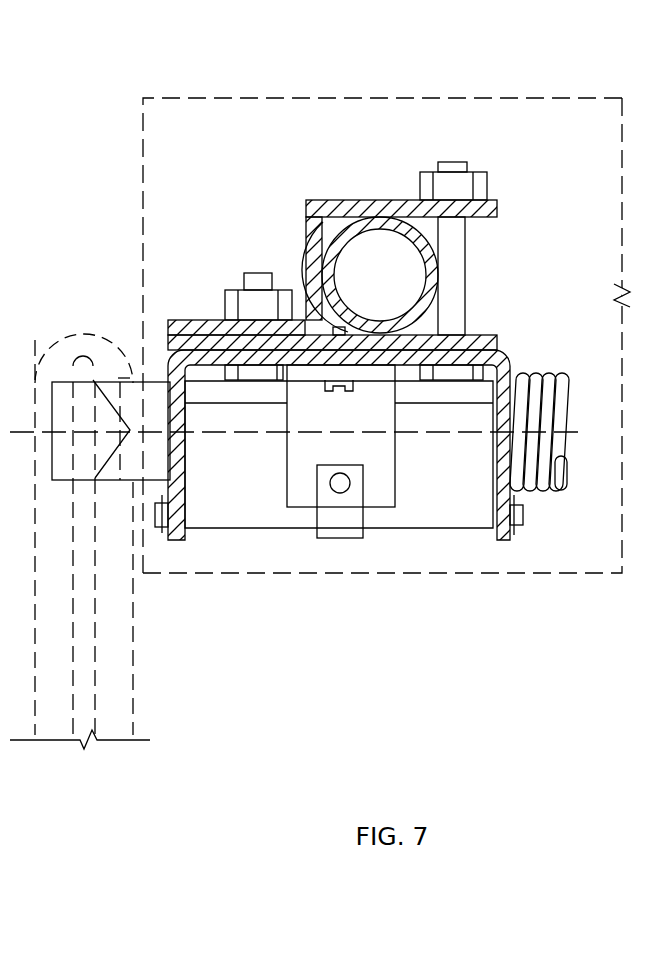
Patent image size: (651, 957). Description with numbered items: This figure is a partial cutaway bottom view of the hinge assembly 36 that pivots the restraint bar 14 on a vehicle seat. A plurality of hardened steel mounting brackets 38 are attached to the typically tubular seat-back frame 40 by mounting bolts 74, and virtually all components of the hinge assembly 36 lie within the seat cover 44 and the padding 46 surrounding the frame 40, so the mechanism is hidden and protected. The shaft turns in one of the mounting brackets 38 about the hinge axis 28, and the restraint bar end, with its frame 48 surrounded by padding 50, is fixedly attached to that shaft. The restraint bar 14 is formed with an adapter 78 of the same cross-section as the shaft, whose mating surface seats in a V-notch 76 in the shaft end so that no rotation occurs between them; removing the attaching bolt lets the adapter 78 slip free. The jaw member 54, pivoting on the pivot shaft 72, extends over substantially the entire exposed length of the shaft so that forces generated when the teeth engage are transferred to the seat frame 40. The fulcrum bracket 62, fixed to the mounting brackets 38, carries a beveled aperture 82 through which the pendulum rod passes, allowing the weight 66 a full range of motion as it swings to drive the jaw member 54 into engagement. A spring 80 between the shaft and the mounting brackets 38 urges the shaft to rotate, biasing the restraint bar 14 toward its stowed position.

The restraint bar 14 is at (138, 688).
The hinge axis 28 is at (570, 428).
The hinge assembly 36 is at (339, 546).
The mounting brackets 38 is at (172, 356).
The frame 40 is at (308, 207).
The seat cover 44 is at (210, 115).
The padding 46 is at (558, 158).
The frame 48 is at (79, 705).
The padding 50 is at (45, 727).
The jaw member 54 is at (222, 460).
The fulcrum bracket 62 is at (298, 468).
The weight 66 is at (327, 528).
The pivot shaft 72 is at (522, 515).
The mounting bolts 74 is at (447, 160).
The V-notch 76 is at (108, 418).
The adapter 78 is at (50, 385).
The spring 80 is at (555, 492).
The beveled aperture 82 is at (342, 497).